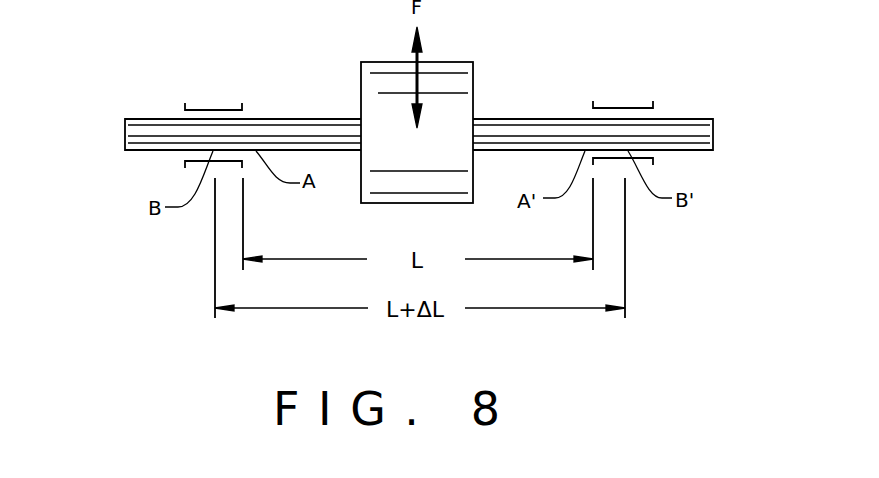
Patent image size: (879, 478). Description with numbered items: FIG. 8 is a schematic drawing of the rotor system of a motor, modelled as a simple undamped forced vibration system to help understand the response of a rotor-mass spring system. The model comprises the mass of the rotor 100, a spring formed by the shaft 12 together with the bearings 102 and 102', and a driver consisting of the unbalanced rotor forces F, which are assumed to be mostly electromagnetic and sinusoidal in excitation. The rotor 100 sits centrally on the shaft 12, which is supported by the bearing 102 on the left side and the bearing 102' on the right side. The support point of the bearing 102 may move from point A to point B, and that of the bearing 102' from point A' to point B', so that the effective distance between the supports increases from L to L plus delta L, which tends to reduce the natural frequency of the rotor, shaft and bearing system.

The shaft 12 is at (148, 151).
The rotor 100 is at (434, 62).
The bearing 102 is at (244, 106).
The bearing 102' is at (653, 104).